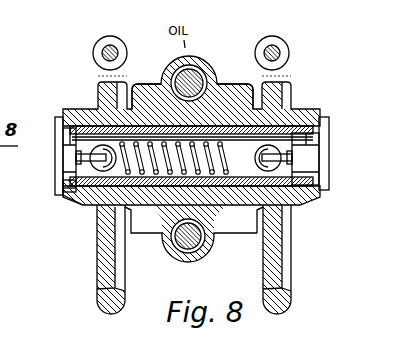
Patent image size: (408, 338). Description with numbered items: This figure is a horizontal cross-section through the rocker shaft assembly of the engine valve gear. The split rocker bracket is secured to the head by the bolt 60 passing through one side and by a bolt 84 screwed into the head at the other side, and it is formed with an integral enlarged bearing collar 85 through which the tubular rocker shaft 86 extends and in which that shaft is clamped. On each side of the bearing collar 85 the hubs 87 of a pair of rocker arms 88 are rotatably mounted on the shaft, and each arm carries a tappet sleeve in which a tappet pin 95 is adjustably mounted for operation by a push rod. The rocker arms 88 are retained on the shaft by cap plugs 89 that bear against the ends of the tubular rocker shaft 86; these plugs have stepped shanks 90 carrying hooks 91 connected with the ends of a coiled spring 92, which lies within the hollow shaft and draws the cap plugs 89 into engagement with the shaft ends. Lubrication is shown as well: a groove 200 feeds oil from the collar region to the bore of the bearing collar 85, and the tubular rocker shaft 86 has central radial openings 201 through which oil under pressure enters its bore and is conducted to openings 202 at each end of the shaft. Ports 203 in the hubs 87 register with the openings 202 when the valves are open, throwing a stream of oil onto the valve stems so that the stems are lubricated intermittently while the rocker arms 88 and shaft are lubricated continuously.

The bolt 60 is at (195, 72).
The bolt 84 is at (171, 254).
The bearing collar 85 is at (156, 109).
The tubular rocker shaft 86 is at (286, 122).
The hubs 87 is at (300, 201).
The rocker arms 88 is at (262, 260).
The cap plugs 89 is at (329, 141).
The stepped shanks 90 is at (307, 157).
The hooks 91 is at (80, 158).
The coiled spring 92 is at (224, 88).
The tappet pin 95 is at (112, 46).
The groove 200 is at (217, 101).
The central radial openings 201 is at (143, 220).
The openings 202 is at (66, 200).
The ports 203 is at (76, 210).